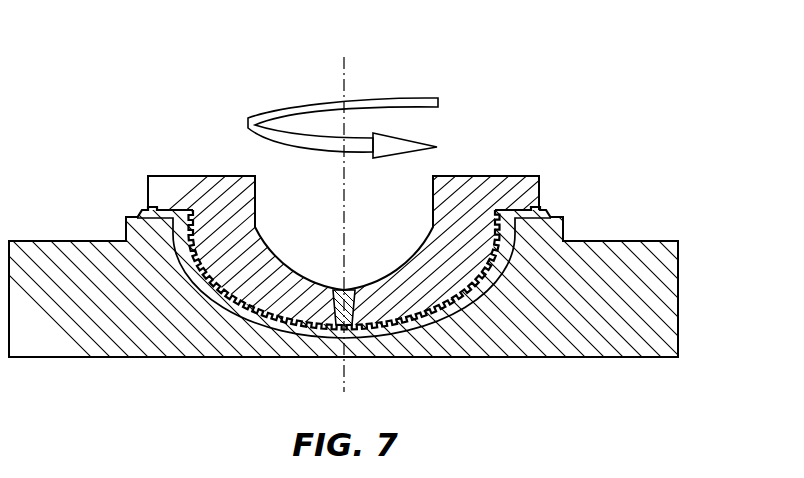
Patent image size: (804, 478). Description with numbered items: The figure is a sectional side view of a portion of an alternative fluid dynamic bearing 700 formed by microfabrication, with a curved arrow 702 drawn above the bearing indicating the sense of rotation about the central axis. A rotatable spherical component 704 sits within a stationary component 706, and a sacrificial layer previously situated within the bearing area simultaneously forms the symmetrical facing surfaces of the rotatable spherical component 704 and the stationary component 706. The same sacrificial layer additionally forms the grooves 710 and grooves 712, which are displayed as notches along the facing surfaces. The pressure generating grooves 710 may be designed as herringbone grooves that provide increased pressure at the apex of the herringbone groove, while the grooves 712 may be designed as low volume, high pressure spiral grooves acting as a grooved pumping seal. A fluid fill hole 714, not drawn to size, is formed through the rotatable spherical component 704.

The fluid dynamic bearing 700 is at (161, 103).
The rotation direction arrow 702 is at (413, 103).
The rotatable spherical component 704 is at (506, 179).
The stationary component 706 is at (668, 284).
The pressure generating grooves 710 is at (222, 312).
The grooves 712 is at (157, 208).
The fluid fill hole 714 is at (335, 289).